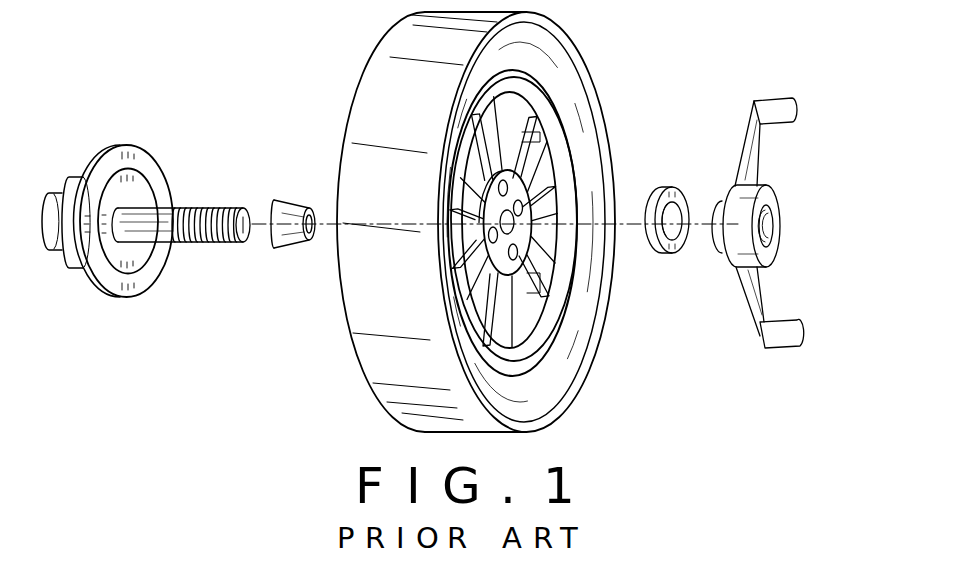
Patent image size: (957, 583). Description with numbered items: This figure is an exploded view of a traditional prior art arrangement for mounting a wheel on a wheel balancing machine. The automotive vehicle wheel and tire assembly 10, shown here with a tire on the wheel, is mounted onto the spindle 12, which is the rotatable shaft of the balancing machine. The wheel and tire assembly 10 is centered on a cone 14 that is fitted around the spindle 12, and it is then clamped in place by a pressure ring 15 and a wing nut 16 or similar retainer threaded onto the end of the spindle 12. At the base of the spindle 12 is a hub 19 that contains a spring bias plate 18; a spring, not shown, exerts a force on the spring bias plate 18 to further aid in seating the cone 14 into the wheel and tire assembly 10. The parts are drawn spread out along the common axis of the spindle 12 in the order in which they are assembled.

The wheel and tire assembly 10 is at (571, 325).
The spindle 12 is at (212, 208).
The cone 14 is at (292, 198).
The pressure ring 15 is at (660, 187).
The wing nut 16 is at (777, 200).
The spring bias plate 18 is at (117, 253).
The hub 19 is at (133, 290).